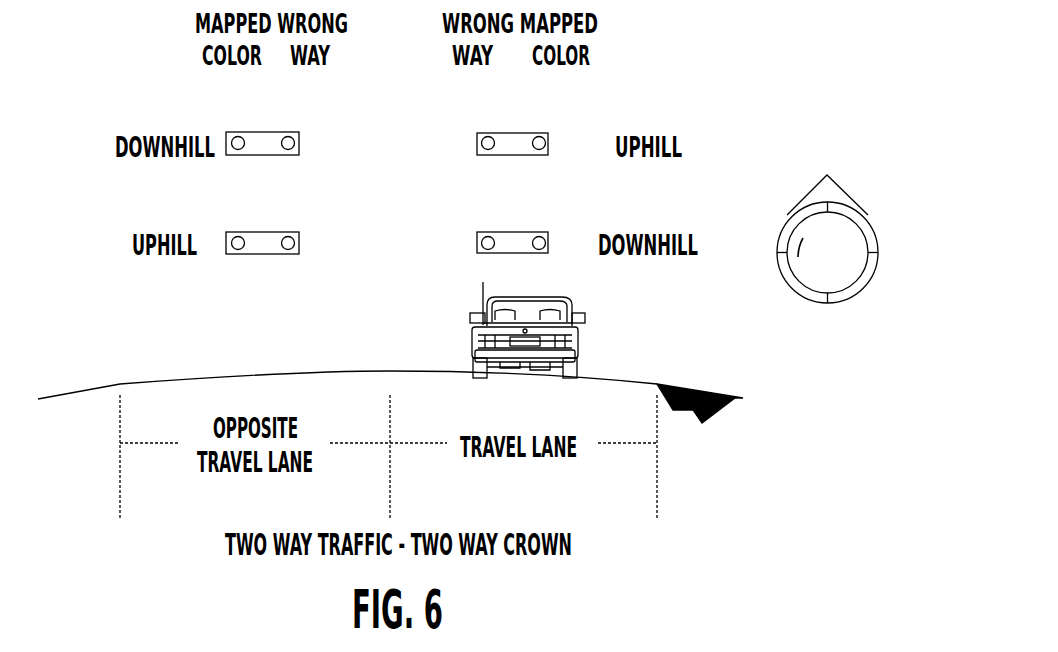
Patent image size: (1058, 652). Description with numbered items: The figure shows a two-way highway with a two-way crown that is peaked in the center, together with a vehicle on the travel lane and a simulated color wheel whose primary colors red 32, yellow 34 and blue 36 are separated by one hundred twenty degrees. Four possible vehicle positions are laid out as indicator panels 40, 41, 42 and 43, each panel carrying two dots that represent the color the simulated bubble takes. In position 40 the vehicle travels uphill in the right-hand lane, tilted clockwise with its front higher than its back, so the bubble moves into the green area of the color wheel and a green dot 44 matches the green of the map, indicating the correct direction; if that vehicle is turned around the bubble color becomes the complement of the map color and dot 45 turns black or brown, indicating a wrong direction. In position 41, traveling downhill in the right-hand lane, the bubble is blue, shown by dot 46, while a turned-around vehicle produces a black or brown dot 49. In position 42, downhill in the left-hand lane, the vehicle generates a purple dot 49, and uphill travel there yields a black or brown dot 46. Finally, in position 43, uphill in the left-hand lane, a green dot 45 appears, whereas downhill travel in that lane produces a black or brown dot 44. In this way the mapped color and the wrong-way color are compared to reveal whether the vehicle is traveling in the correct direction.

The red 32 is at (833, 277).
The yellow 34 is at (850, 202).
The blue 36 is at (813, 282).
The position 40 is at (548, 155).
The position 41 is at (548, 253).
The position 42 is at (299, 155).
The position 43 is at (299, 254).
The green dot 44 is at (240, 238).
The dot 45 is at (292, 238).
The dot 46 is at (240, 138).
The dot 49 is at (292, 138).